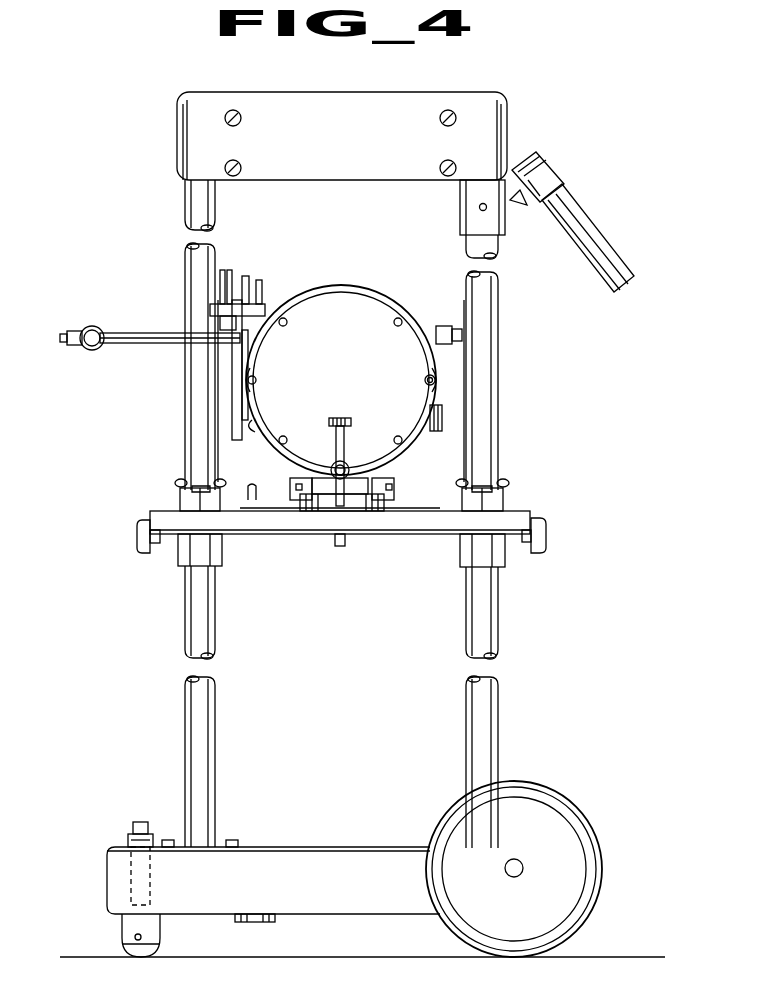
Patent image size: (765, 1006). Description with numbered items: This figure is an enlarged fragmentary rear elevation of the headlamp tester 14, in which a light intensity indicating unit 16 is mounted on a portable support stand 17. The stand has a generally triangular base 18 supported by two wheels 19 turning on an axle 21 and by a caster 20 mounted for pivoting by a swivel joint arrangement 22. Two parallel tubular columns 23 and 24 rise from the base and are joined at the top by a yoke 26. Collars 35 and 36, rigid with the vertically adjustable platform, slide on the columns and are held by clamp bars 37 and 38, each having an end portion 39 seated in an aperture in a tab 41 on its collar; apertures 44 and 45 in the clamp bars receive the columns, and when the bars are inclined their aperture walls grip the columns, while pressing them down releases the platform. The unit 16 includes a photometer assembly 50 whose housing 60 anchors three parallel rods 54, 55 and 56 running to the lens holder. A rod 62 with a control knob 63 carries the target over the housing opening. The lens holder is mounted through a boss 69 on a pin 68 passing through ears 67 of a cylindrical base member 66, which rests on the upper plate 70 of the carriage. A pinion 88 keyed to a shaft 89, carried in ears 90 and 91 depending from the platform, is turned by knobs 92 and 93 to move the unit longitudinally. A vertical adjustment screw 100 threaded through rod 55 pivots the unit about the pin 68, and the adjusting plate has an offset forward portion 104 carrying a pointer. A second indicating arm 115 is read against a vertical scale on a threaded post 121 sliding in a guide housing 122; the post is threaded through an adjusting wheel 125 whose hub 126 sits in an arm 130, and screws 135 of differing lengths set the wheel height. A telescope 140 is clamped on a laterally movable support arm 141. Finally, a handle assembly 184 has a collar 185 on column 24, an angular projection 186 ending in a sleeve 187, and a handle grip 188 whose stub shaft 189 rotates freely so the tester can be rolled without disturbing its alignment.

The tester 14 is at (522, 128).
The yoke 26 is at (358, 135).
The light intensity indicating unit 16 is at (344, 367).
The portable support stand 17 is at (470, 869).
The triangular base 18 is at (303, 891).
The wheels 19 is at (520, 836).
The caster 20 is at (124, 938).
The axle 21 is at (524, 868).
The swivel joint arrangement 22 is at (152, 882).
The tubular column 23 is at (200, 262).
The tubular column 24 is at (488, 298).
The collar 35 is at (186, 550).
The collar 36 is at (468, 550).
The clamp bar 37 is at (180, 486).
The clamp bar 38 is at (505, 487).
The end portion 39 is at (195, 483).
The tab 41 is at (205, 498).
The aperture 44 is at (218, 482).
The aperture 45 is at (466, 475).
The photometer assembly 50 is at (416, 316).
The rod 54 is at (420, 380).
The rod 55 is at (350, 463).
The rod 56 is at (263, 380).
The housing 60 is at (375, 352).
The rod 62 is at (257, 430).
The control knob 63 is at (436, 420).
The cylindrical base member 66 is at (318, 502).
The upstanding ears 67 is at (296, 487).
The pin 68 is at (294, 478).
The boss 69 is at (322, 478).
The upper plate 70 is at (247, 499).
The pinion 88 is at (340, 548).
The shaft 89 is at (296, 540).
The ear 90 is at (528, 545).
The ear 91 is at (156, 546).
The knob 92 is at (561, 551).
The knob 93 is at (127, 553).
The vertical adjustment screw 100 is at (345, 437).
The upwardly offset forward portion 104 is at (400, 500).
The second indicating arm 115 is at (232, 388).
The threaded post 121 is at (250, 277).
The guide housing 122 is at (242, 408).
The adjusting wheel 125 is at (212, 308).
The hub 126 is at (218, 337).
The arm 130 is at (236, 323).
The screws 135 is at (228, 272).
The telescope 140 is at (95, 350).
The support arm 141 is at (178, 340).
The handle assembly 184 is at (542, 207).
The collar 185 is at (470, 213).
The angular projection 186 is at (512, 203).
The sleeve 187 is at (555, 172).
The handle grip 188 is at (580, 228).
The stub shaft 189 is at (530, 168).